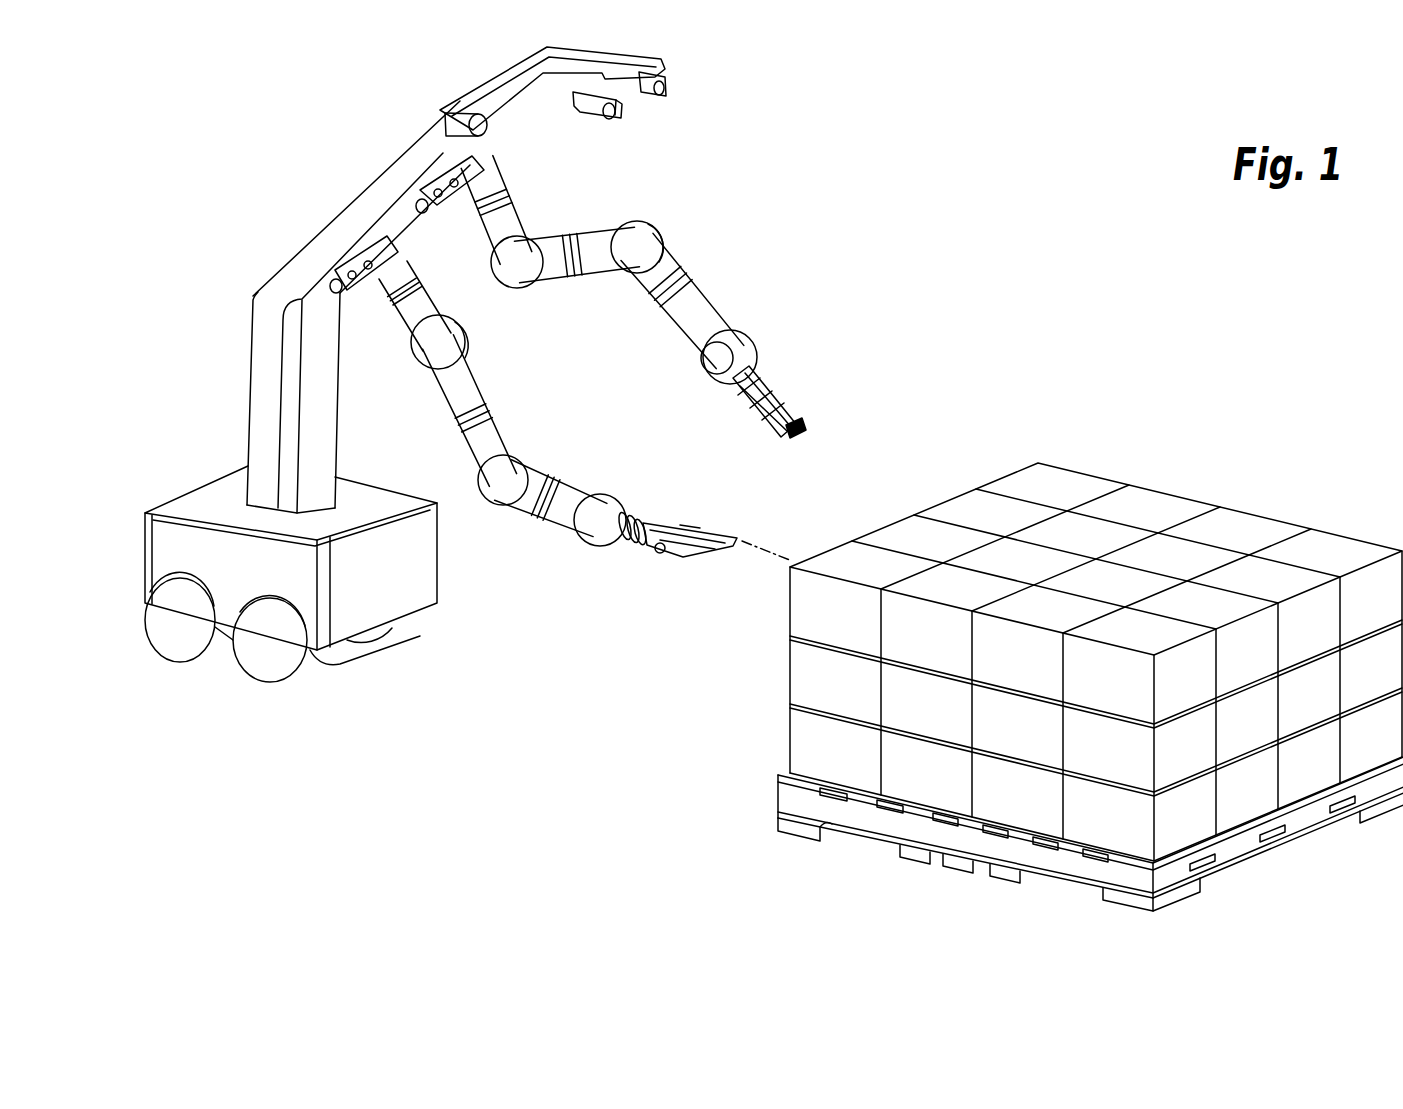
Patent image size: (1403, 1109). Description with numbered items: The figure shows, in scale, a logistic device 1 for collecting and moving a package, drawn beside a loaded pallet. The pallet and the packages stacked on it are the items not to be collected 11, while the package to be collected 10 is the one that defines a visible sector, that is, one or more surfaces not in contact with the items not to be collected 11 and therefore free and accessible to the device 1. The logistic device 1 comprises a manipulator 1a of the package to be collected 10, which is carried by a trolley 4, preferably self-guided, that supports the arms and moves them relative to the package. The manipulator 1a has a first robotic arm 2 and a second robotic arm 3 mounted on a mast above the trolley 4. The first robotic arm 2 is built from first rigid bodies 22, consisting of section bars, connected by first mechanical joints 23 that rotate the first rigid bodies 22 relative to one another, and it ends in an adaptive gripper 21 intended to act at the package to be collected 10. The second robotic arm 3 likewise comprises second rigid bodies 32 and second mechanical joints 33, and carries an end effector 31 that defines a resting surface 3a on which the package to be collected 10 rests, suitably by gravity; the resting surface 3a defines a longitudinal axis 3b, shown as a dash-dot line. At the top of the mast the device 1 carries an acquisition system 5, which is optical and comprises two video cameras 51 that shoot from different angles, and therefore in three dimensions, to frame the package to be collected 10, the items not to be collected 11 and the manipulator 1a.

The logistic device 1 is at (953, 137).
The manipulator 1a is at (190, 740).
The first robotic arm 2 is at (838, 238).
The adaptive gripper 21 is at (822, 405).
The first rigid bodies 22 is at (572, 282).
The first mechanical joints 23 is at (668, 227).
The second robotic arm 3 is at (530, 620).
The end effector 31 is at (670, 460).
The second rigid bodies 32 is at (495, 427).
The second mechanical joints 33 is at (400, 368).
The resting surface 3a is at (684, 522).
The longitudinal axis 3b is at (748, 556).
The trolley 4 is at (200, 466).
The acquisition system 5 is at (700, 66).
The video camera 51 is at (612, 120).
The package to be collected 10 is at (911, 542).
The item not to be collected 11 is at (964, 507).